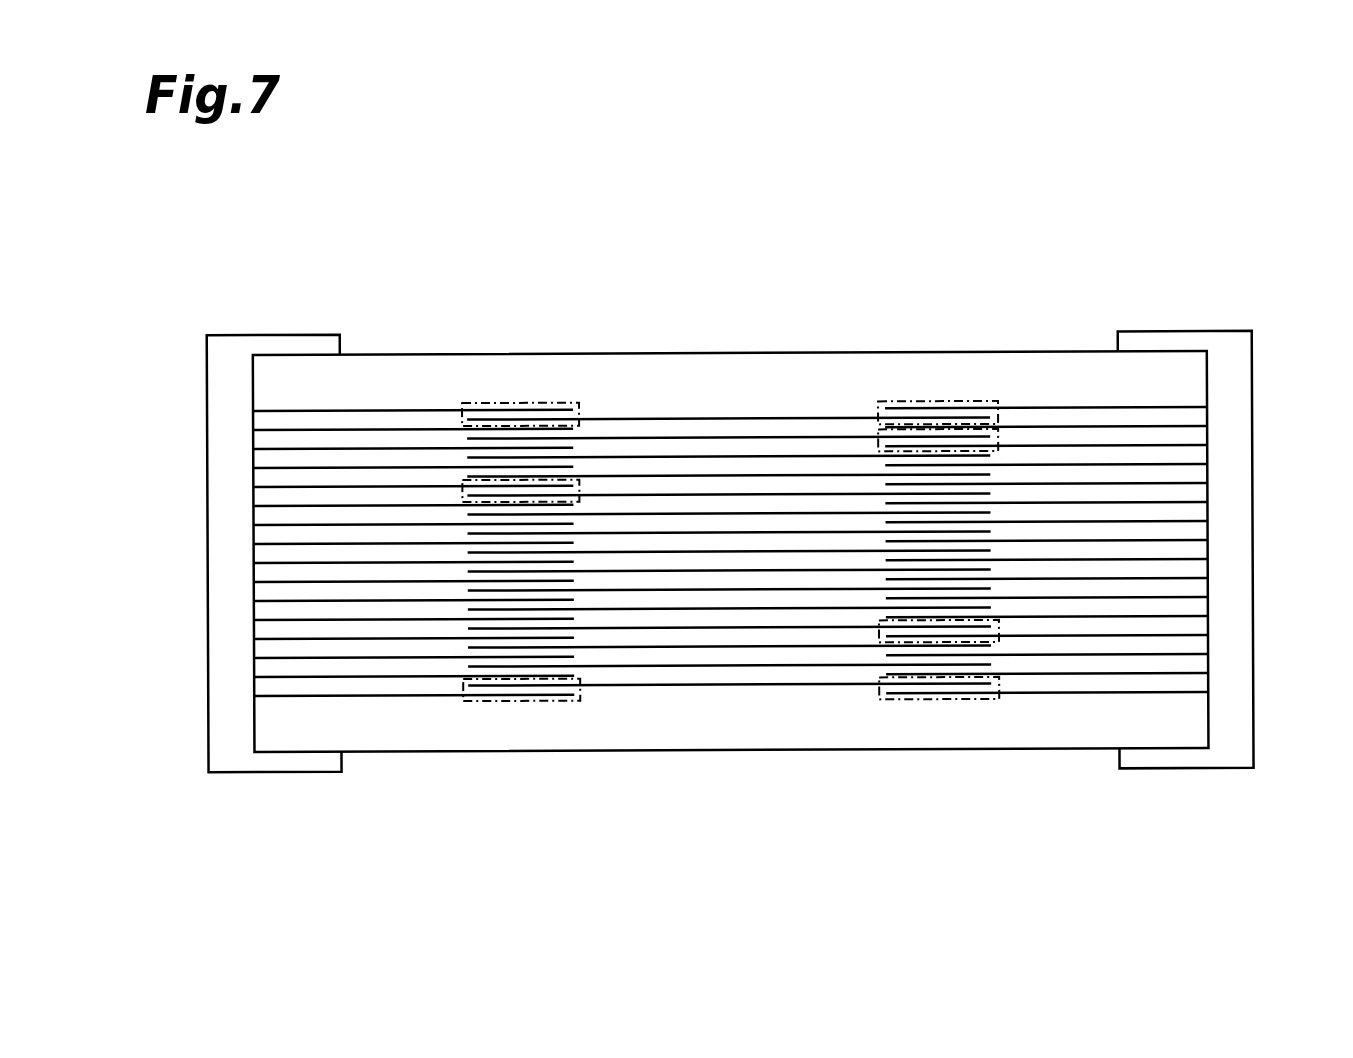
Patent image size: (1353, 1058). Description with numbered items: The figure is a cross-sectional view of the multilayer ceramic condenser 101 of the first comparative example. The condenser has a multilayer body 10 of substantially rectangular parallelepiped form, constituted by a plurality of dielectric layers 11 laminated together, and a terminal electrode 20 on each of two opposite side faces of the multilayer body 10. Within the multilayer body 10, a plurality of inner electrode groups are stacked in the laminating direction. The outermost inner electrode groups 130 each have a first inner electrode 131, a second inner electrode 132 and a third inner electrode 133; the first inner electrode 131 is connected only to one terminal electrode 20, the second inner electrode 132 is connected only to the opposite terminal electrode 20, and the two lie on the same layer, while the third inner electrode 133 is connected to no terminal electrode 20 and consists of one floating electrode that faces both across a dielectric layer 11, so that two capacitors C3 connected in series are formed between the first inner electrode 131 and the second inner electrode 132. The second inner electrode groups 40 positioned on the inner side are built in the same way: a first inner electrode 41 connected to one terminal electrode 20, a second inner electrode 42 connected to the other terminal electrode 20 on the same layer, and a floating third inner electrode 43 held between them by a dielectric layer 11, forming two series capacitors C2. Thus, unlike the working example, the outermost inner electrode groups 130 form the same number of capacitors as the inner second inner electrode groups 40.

The multilayer ceramic condenser 101 is at (1243, 265).
The multilayer body 10 is at (369, 755).
The dielectric layer 11 is at (268, 693).
The terminal electrode 20 is at (222, 671).
The second inner electrode group 40 is at (617, 552).
The first inner electrode 41 is at (281, 523).
The second inner electrode 42 is at (903, 520).
The third inner electrode 43 is at (600, 534).
The outermost inner electrode group 130 is at (445, 277).
The first inner electrode 131 is at (462, 418).
The second inner electrode 132 is at (1008, 420).
The third inner electrode 133 is at (742, 412).
The capacitor C2 is at (462, 490).
The capacitor C3 is at (926, 762).